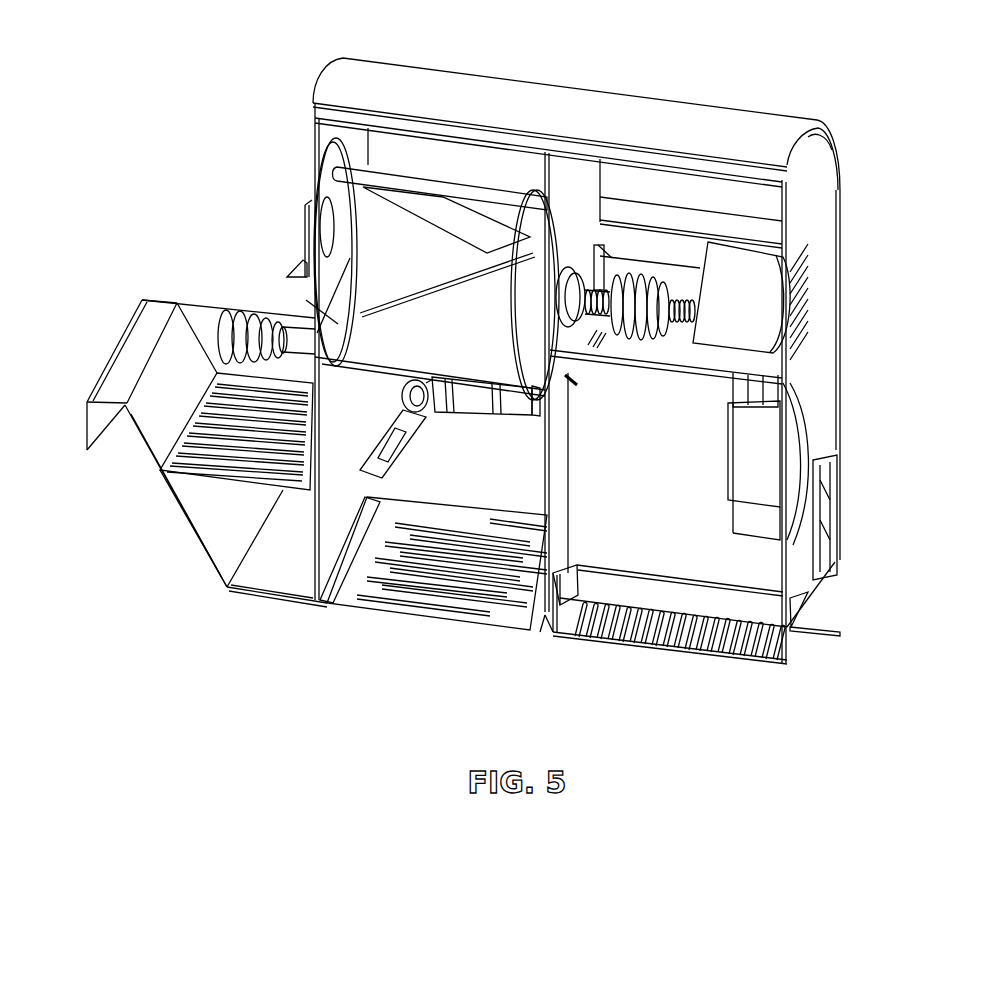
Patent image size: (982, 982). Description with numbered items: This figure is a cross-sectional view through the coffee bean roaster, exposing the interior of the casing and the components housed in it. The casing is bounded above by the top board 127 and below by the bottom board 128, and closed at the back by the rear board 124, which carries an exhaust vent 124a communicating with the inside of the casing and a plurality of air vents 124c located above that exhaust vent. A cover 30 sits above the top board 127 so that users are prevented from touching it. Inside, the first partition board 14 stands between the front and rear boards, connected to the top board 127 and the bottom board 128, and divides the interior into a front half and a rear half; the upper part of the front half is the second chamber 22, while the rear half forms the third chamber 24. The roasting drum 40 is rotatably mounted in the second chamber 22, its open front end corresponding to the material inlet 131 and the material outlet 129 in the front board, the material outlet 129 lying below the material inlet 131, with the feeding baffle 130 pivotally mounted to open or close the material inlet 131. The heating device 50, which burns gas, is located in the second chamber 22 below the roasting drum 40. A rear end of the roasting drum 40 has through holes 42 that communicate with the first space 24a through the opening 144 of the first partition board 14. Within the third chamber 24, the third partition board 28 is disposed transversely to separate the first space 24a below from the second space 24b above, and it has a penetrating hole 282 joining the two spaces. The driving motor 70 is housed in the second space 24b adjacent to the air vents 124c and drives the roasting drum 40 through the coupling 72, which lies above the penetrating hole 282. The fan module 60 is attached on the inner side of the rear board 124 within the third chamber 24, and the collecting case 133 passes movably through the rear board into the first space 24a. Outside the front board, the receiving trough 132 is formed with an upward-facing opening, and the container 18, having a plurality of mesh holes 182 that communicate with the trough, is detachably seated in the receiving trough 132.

The first partition board 14 is at (558, 497).
The container 18 is at (177, 433).
The second chamber 22 is at (497, 490).
The third chamber 24 is at (550, 367).
The first space 24a is at (712, 553).
The second space 24b is at (577, 182).
The third partition board 28 is at (720, 367).
The cover 30 is at (520, 108).
The roasting drum 40 is at (440, 183).
The through holes 42 is at (557, 376).
The heating device 50 is at (375, 490).
The fan module 60 is at (782, 448).
The driving motor 70 is at (730, 260).
The coupling 72 is at (632, 262).
The rear board 124 is at (872, 407).
The exhaust vent 124a is at (803, 407).
The air vents 124c is at (805, 253).
The top board 127 is at (832, 150).
The bottom board 128 is at (833, 578).
The material outlet 129 is at (340, 323).
The feeding baffle 130 is at (307, 205).
The material inlet 131 is at (303, 260).
The receiving trough 132 is at (273, 557).
The collecting case 133 is at (805, 620).
The opening 144 is at (575, 380).
The mesh holes 182 is at (195, 445).
The penetrating hole 282 is at (597, 333).